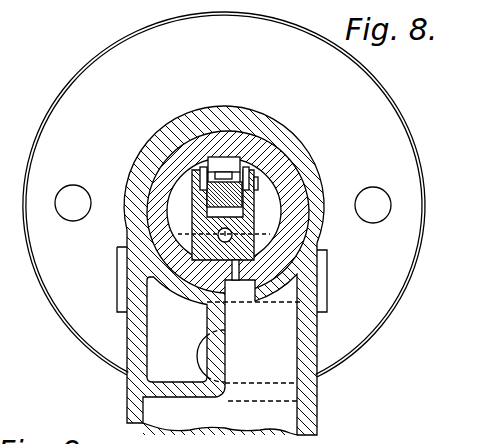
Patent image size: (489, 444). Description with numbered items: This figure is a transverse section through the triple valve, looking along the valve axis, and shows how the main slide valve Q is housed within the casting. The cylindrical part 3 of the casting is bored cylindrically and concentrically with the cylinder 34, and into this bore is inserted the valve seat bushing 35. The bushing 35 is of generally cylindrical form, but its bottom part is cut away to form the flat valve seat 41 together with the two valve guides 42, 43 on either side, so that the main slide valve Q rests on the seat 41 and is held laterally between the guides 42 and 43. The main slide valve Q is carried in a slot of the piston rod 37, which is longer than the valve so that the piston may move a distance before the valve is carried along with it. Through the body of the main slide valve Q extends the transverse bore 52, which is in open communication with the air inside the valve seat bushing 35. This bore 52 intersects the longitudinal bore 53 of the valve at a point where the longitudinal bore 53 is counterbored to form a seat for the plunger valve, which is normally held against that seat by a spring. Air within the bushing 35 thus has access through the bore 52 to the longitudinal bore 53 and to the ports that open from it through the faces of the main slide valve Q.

The cylinder 34 is at (254, 194).
The valve seat bushing 35 is at (292, 187).
The piston rod 37 is at (232, 199).
The flat valve seat 41 is at (208, 284).
The valve guide 42 is at (221, 270).
The valve guide 43 is at (257, 252).
The bore 52 is at (206, 238).
The longitudinal bore 53 is at (222, 229).
The main slide valve Q is at (253, 224).
The cylindrical part 3 is at (258, 183).